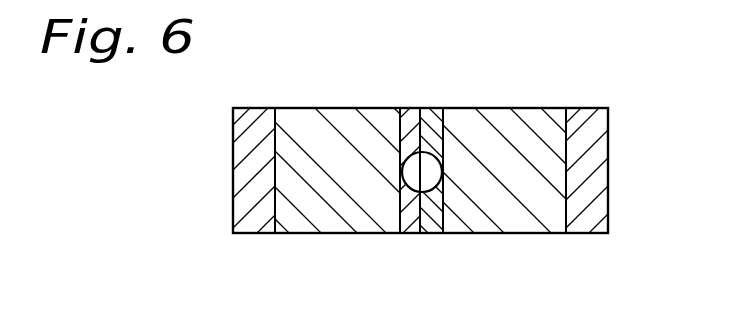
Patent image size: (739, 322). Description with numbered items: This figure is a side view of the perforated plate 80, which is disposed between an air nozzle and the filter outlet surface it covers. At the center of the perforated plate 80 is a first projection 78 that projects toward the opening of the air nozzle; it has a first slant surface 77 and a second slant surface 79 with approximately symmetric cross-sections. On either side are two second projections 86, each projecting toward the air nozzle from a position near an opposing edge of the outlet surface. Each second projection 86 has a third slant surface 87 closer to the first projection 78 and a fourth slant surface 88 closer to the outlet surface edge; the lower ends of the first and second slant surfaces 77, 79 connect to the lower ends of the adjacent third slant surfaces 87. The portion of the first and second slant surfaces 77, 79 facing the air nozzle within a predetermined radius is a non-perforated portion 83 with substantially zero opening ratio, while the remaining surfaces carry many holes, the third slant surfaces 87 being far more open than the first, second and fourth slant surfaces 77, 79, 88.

The first slant surface 77 is at (434, 213).
The first projection 78 is at (424, 127).
The second slant surface 79 is at (406, 213).
The perforated plate 80 is at (349, 100).
The non-perforated portion 83 is at (432, 172).
The second projection 86 is at (288, 112).
The third slant surface 87 is at (333, 220).
The fourth slant surface 88 is at (240, 193).